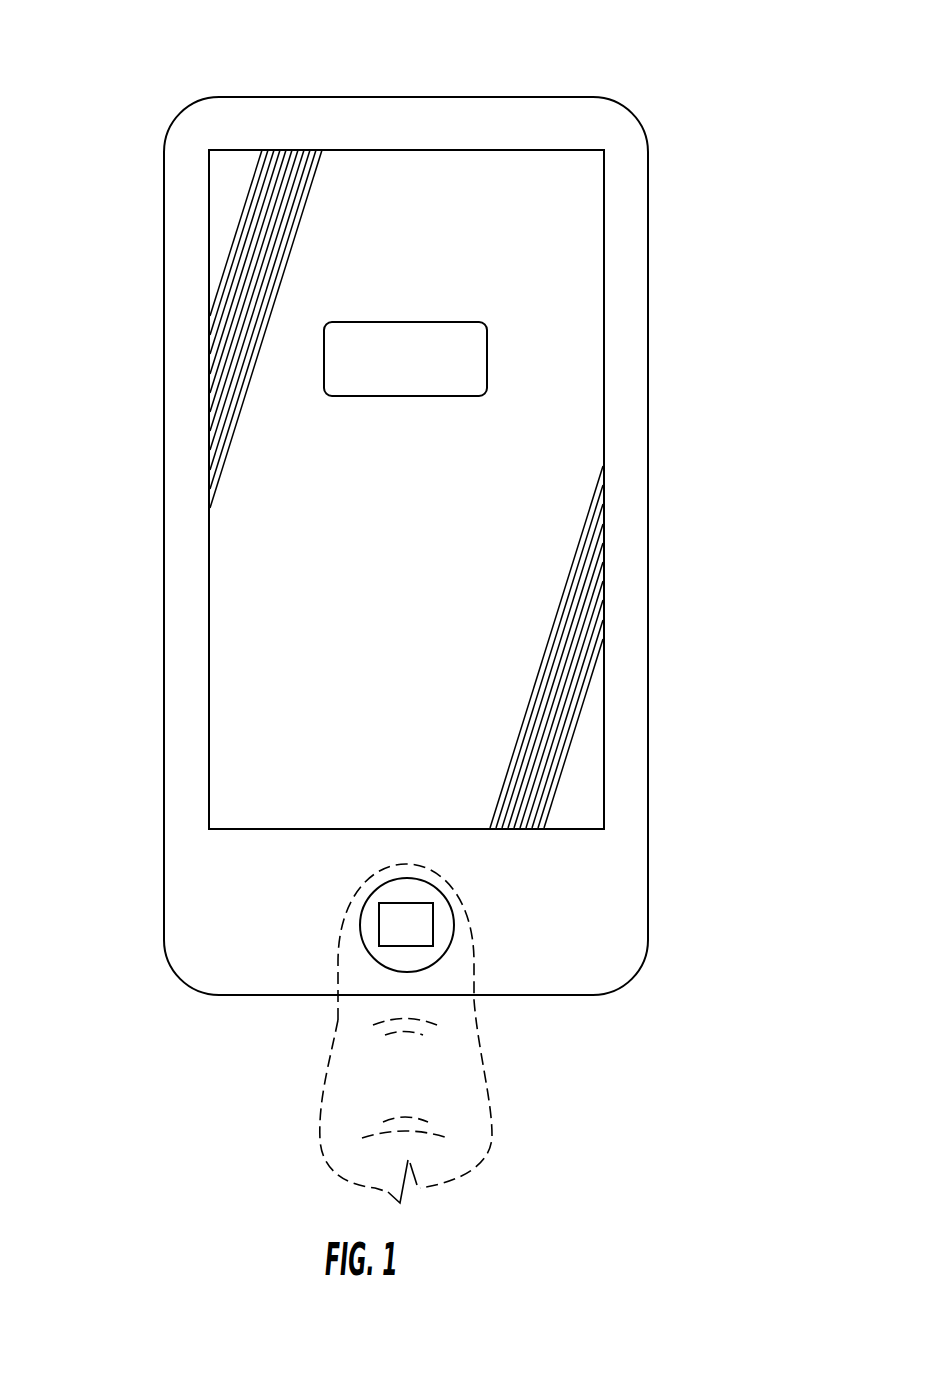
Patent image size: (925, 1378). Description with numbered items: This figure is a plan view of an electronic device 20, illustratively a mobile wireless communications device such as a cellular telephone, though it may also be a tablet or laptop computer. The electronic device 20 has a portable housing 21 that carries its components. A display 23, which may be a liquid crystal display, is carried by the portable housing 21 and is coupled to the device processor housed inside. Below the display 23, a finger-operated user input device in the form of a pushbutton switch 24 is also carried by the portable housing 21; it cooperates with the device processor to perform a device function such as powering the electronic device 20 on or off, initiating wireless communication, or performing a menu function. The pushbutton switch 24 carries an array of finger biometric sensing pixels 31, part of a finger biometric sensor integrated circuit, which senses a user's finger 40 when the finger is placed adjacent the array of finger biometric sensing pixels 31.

The electronic device 20 is at (340, 500).
The portable housing 21 is at (118, 320).
The display 23 is at (338, 489).
The pushbutton switch 24 is at (444, 919).
The array of finger biometric sensing pixels 31 is at (444, 982).
The user's finger 40 is at (363, 1033).